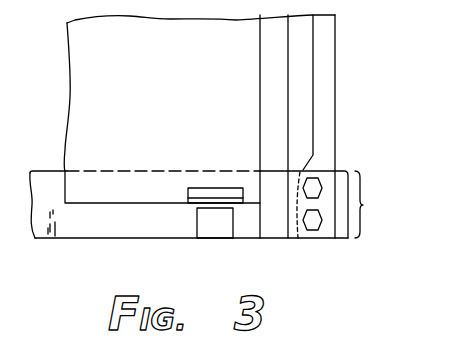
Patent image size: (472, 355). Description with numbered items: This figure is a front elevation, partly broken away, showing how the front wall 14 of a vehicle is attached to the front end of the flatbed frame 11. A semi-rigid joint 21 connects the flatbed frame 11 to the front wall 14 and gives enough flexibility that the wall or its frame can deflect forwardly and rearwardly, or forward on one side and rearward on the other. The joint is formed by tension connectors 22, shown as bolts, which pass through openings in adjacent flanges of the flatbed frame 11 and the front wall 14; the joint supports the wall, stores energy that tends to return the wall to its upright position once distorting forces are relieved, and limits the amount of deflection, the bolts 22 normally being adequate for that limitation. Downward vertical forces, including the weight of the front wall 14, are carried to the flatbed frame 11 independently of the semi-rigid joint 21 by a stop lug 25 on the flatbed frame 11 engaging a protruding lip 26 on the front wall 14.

The flatbed frame 11 is at (78, 220).
The front wall 14 is at (320, 85).
The semi-rigid joint 21 is at (375, 204).
The tension connectors 22 is at (314, 178).
The stop lug 25 is at (214, 218).
The protruding lip 26 is at (212, 188).